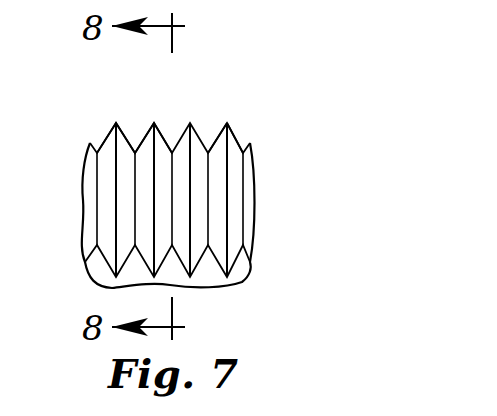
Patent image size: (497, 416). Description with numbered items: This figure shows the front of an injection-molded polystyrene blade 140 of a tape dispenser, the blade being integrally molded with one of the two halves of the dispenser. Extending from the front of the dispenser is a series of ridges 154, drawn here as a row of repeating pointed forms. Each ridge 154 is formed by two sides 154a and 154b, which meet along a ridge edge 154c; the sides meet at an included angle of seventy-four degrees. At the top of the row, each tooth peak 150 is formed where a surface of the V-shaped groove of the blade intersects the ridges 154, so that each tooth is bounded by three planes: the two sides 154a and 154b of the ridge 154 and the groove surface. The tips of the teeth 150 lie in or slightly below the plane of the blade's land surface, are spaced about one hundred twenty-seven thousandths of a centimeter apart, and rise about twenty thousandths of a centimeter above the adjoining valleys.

The polystyrene blade 140 is at (221, 153).
The tooth peak 150 is at (148, 120).
The ridges 154 is at (213, 178).
The side of ridge 154a is at (235, 143).
The side of ridge 154b is at (215, 148).
The ridge edge 154c is at (230, 228).